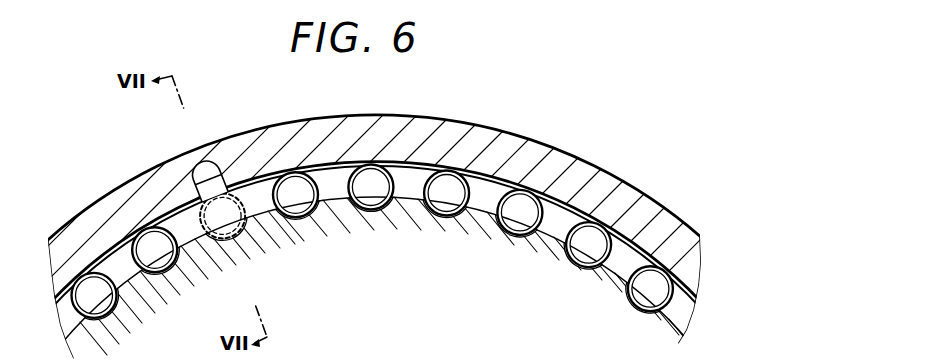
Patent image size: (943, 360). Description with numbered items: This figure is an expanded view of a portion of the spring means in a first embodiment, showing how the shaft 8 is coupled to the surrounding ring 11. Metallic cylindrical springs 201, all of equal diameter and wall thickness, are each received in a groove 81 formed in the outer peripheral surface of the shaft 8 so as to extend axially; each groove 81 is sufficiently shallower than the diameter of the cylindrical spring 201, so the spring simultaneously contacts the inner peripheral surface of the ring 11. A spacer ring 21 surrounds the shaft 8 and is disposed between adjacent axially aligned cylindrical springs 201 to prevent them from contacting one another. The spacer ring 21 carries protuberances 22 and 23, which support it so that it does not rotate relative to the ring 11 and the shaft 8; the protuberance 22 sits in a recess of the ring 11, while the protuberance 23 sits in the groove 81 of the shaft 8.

The ring 11 is at (498, 142).
The spacer ring 21 is at (376, 200).
The cylindrical spring 201 is at (421, 167).
The protuberance 22 is at (197, 183).
The protuberance 23 is at (225, 236).
The shaft 8 is at (380, 278).
The groove 81 is at (272, 218).